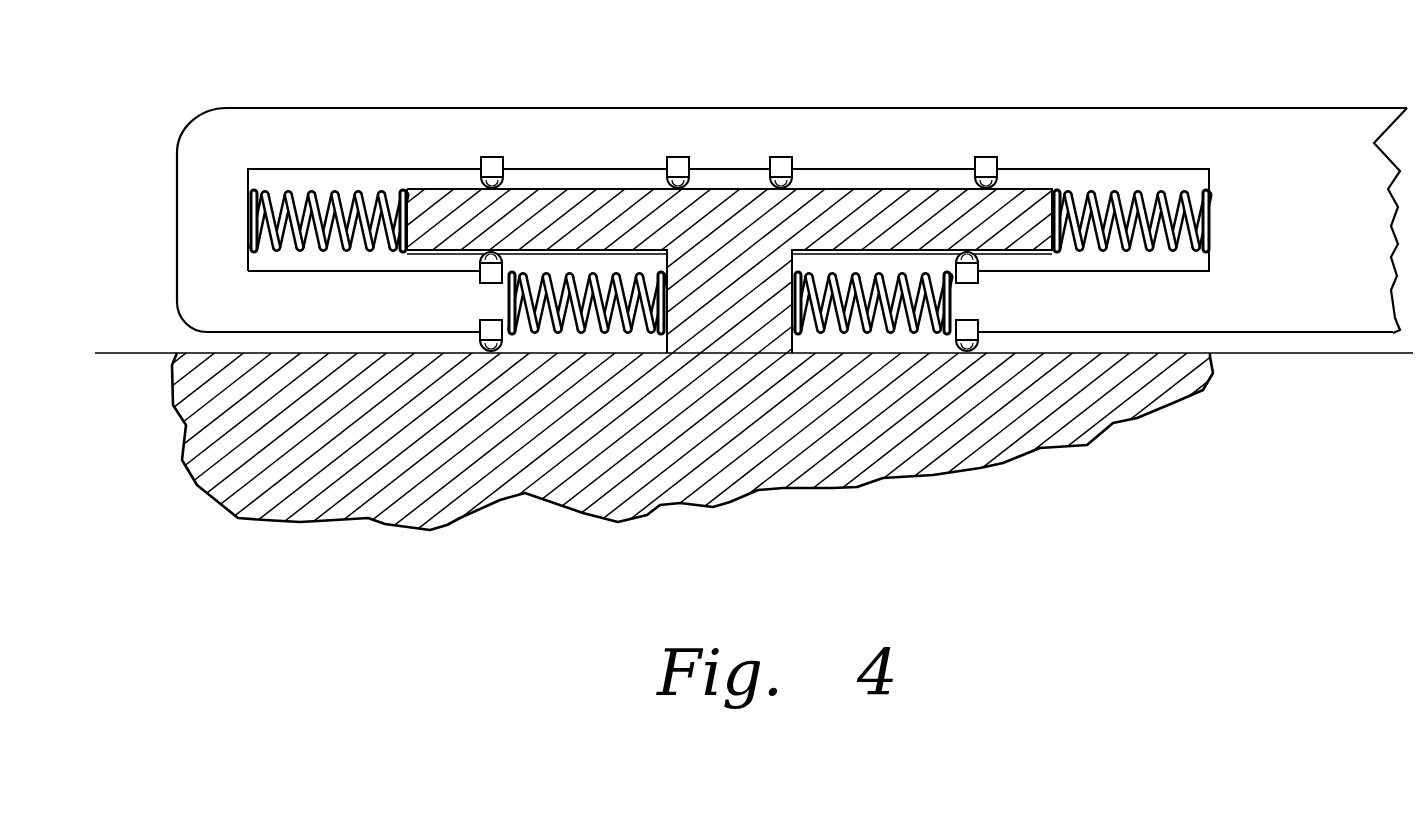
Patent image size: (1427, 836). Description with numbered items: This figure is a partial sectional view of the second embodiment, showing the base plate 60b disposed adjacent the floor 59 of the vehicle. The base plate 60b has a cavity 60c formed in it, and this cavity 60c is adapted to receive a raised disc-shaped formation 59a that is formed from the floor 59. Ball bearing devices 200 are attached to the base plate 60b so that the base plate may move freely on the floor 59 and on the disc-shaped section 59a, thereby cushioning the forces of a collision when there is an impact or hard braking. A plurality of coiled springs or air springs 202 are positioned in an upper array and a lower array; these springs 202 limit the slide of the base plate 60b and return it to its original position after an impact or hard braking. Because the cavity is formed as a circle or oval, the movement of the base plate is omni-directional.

The floor 59 is at (680, 492).
The raised disc-shaped formation 59a is at (922, 187).
The base plate 60b is at (663, 108).
The cavity 60c is at (398, 183).
The ball bearing devices 200 is at (793, 175).
The coiled springs or air springs 202 is at (293, 190).